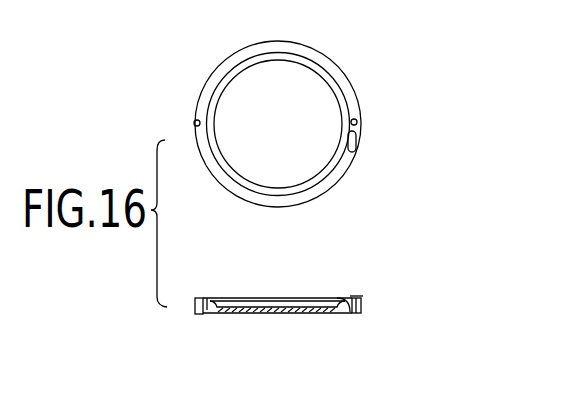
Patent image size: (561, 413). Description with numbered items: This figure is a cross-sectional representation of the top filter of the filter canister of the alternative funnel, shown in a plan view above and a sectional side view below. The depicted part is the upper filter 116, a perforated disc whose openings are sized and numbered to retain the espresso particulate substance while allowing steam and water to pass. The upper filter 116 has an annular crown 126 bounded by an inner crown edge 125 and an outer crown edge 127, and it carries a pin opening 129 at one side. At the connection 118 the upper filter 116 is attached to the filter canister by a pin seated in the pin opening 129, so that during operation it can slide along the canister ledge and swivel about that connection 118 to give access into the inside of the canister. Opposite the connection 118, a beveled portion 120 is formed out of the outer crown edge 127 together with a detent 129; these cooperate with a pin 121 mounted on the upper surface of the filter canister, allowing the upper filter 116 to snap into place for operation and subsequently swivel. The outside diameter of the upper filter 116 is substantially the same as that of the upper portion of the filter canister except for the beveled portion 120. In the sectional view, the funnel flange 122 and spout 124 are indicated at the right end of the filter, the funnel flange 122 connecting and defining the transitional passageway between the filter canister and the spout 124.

The upper filter 116 is at (311, 88).
The connection 118 is at (186, 120).
The beveled portion 120 is at (362, 97).
The pin 121 is at (366, 125).
The funnel flange 122 is at (368, 315).
The spout 124 is at (366, 292).
The inner crown edge 125 is at (264, 204).
The annular crown 126 is at (320, 188).
The outer crown edge 127 is at (211, 189).
The pin opening 129 is at (190, 127).